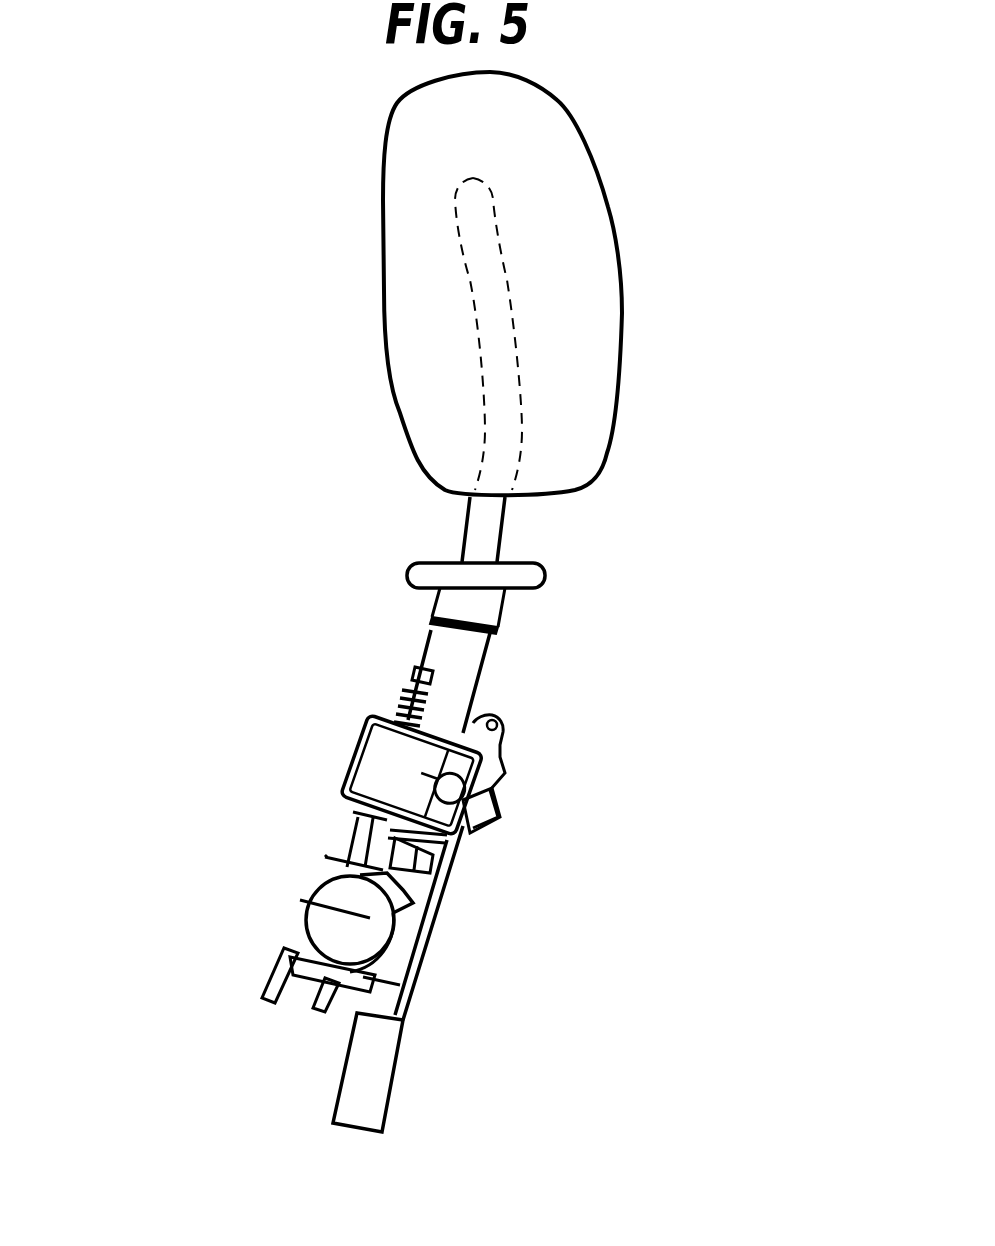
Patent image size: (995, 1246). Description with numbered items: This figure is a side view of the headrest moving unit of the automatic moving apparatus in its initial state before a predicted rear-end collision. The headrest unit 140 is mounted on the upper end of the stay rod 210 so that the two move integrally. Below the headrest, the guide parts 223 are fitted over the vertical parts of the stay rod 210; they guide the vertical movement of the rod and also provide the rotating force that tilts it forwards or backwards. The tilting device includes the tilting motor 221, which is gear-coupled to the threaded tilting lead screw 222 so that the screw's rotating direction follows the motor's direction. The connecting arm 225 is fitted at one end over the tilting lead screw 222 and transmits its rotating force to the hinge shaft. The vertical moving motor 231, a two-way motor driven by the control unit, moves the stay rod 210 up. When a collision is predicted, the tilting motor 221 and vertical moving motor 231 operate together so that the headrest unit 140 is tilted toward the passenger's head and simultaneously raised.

The headrest unit 140 is at (623, 308).
The stay rod 210 is at (490, 522).
The guide parts 223 is at (468, 677).
The connecting arm 225 is at (490, 830).
The vertical moving motor 231 is at (505, 757).
The tilting lead screw 222 is at (350, 833).
The tilting motor 221 is at (330, 923).